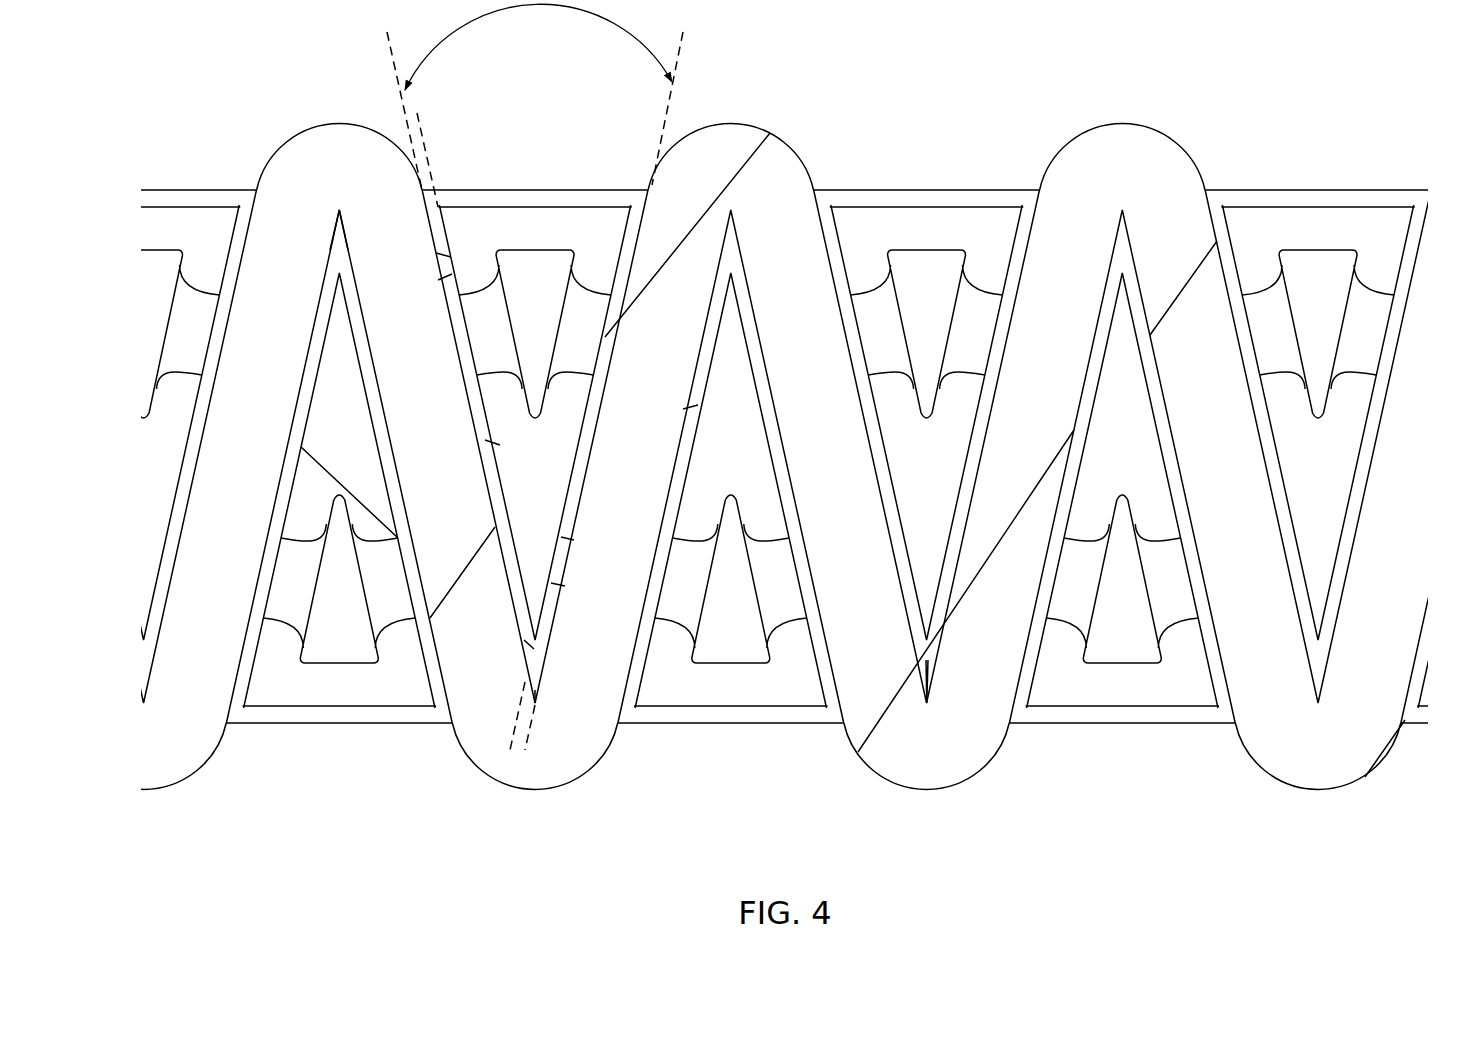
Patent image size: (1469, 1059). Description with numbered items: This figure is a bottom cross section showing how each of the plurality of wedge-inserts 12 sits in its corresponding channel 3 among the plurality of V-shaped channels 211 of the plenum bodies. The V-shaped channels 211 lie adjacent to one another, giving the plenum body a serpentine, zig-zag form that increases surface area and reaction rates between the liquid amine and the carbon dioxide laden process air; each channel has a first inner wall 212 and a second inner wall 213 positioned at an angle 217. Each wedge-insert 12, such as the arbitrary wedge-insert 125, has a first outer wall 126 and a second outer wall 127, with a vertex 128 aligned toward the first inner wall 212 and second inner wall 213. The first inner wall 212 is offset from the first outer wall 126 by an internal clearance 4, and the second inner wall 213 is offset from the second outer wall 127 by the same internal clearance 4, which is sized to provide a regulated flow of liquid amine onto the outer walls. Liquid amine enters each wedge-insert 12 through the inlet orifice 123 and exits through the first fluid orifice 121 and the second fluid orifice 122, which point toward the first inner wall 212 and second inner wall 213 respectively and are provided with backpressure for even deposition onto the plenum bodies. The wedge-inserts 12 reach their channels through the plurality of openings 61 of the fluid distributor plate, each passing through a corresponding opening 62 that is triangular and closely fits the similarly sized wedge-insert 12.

The corresponding channel 3 is at (544, 634).
The internal clearance 4 is at (455, 106).
The wedge-insert 12 is at (330, 303).
The opening 61 is at (930, 196).
The corresponding opening 62 is at (537, 196).
The first fluid orifice 121 is at (487, 345).
The second fluid orifice 122 is at (578, 343).
The inlet orifice 123 is at (532, 290).
The arbitrary wedge-insert 125 is at (497, 438).
The first outer wall 126 is at (445, 282).
The second outer wall 127 is at (558, 584).
The vertex 128 is at (530, 645).
The V-shaped channel 211 is at (339, 266).
The first inner wall 212 is at (442, 254).
The second inner wall 213 is at (567, 532).
The angle 217 is at (540, 6).